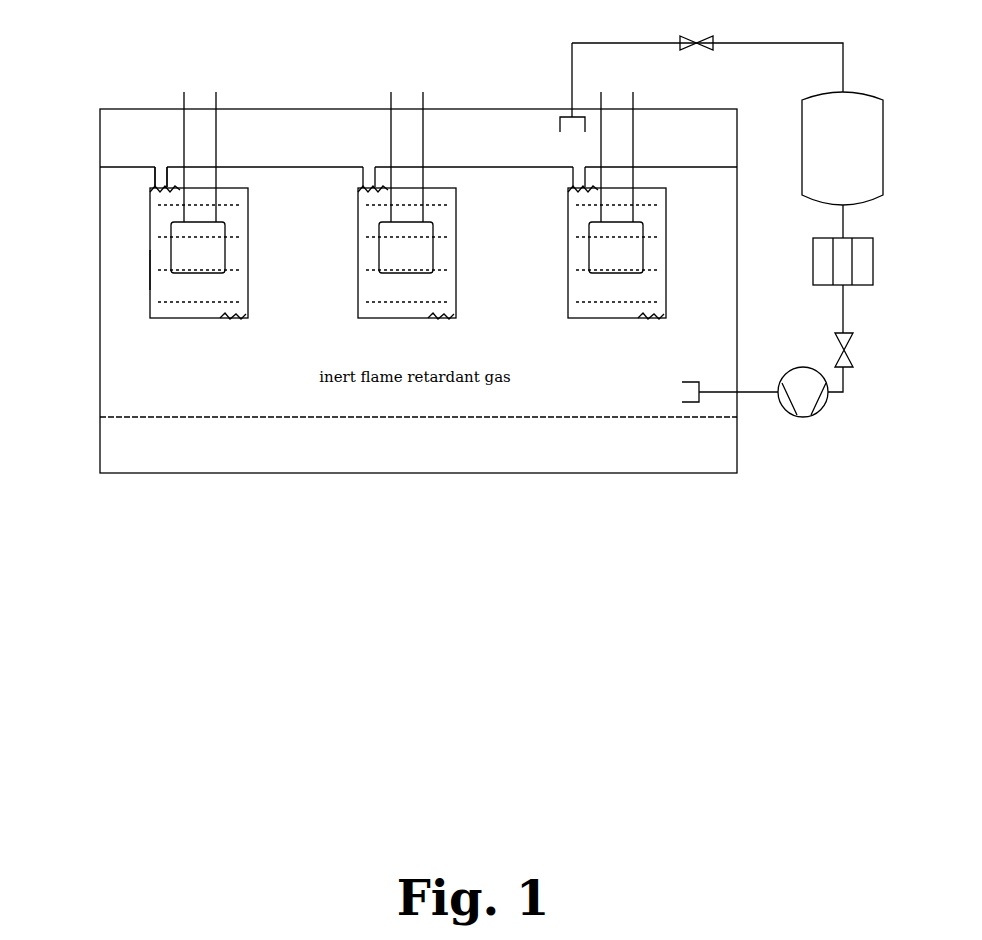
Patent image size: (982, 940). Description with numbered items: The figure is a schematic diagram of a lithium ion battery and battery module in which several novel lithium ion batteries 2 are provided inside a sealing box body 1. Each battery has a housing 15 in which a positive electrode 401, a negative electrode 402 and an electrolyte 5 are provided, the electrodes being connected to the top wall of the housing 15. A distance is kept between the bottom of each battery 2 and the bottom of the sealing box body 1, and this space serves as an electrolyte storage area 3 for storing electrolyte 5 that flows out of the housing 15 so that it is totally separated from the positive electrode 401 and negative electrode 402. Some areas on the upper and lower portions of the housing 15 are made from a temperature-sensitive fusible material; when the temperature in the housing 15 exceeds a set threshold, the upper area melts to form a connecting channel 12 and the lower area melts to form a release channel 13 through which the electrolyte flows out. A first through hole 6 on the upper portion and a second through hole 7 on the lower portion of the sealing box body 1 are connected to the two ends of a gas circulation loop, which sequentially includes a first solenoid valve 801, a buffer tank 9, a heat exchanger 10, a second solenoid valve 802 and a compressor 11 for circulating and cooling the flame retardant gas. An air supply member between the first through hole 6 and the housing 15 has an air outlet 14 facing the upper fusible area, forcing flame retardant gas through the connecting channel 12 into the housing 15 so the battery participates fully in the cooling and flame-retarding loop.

The sealing box body 1 is at (313, 480).
The novel lithium ion battery 2 is at (408, 259).
The electrolyte storage area 3 is at (418, 438).
The positive electrode 401 is at (381, 142).
The negative electrode 402 is at (425, 142).
The electrolyte 5 is at (235, 271).
The first through hole 6 is at (563, 88).
The second through hole 7 is at (712, 392).
The first solenoid valve 801 is at (697, 30).
The second solenoid valve 802 is at (865, 350).
The buffer tank 9 is at (842, 148).
The heat exchanger 10 is at (860, 261).
The compressor 11 is at (803, 405).
The connecting channel 12 is at (150, 188).
The release channel 13 is at (233, 322).
The air outlet 14 is at (156, 165).
The housing 15 is at (150, 267).